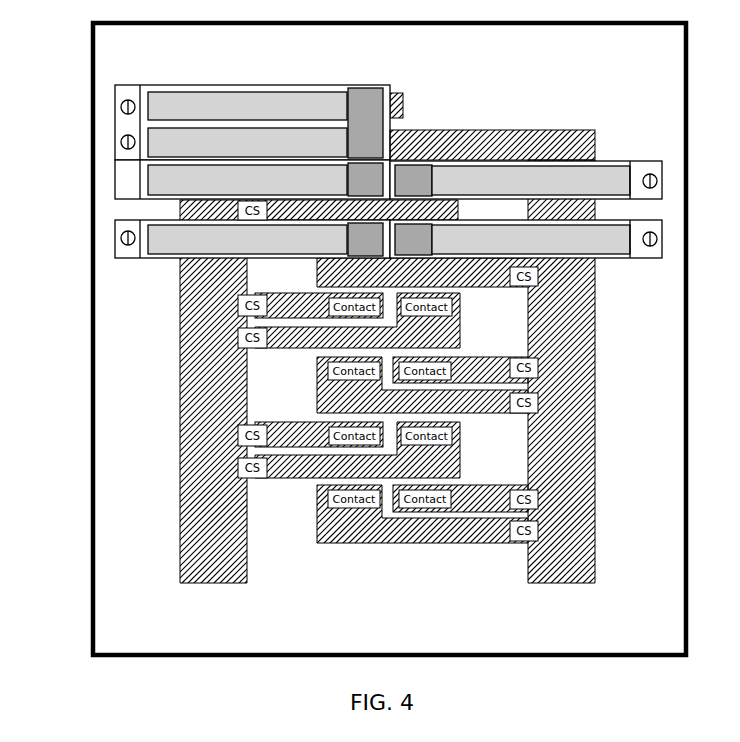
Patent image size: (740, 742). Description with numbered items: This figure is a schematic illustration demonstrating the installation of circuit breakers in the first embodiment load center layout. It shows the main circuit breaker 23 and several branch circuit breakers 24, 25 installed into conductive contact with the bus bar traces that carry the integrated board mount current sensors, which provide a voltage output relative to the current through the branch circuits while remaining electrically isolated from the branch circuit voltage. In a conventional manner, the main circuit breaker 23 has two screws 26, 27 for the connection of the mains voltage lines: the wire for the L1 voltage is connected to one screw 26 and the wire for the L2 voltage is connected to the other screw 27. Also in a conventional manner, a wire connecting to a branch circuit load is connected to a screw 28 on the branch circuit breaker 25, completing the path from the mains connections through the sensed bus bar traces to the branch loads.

The main circuit breaker 23 is at (328, 100).
The branch circuit breaker 24 is at (157, 184).
The branch circuit breaker 25 is at (582, 173).
The screw 26 is at (124, 105).
The screw 27 is at (128, 141).
The screw 28 is at (656, 182).